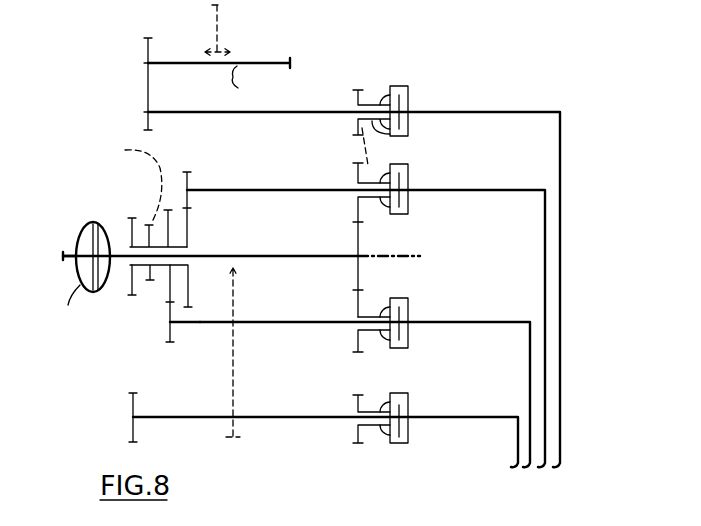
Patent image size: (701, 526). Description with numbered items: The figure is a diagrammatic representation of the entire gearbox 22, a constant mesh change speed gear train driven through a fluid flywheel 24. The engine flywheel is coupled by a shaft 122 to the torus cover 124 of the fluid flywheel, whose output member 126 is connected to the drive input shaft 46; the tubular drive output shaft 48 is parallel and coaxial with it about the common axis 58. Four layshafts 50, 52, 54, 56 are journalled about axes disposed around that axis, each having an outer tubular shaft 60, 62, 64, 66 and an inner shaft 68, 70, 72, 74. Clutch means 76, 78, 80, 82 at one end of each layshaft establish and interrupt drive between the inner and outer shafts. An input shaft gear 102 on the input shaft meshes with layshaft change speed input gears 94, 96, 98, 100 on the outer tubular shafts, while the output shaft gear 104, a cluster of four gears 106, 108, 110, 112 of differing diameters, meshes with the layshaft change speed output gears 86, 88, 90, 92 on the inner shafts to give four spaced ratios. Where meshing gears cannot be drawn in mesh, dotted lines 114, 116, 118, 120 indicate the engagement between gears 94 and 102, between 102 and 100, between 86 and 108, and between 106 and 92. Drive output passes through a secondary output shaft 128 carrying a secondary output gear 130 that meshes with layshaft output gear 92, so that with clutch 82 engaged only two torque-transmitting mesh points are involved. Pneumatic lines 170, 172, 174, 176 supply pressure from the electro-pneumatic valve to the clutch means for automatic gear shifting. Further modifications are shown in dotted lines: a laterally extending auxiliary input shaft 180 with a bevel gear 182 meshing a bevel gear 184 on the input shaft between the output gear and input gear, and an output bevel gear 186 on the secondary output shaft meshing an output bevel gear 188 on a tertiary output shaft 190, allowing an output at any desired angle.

The gearbox 22 is at (211, 444).
The fluid flywheel 24 is at (93, 292).
The drive input shaft 46 is at (196, 253).
The drive output shaft 48 is at (197, 190).
The layshaft 50 is at (371, 439).
The layshaft 52 is at (378, 333).
The layshaft 54 is at (370, 200).
The layshaft 56 is at (384, 134).
The axis 58 is at (420, 256).
The outer tubular shaft 60 is at (384, 428).
The outer tubular shaft 62 is at (400, 343).
The outer tubular shaft 64 is at (400, 209).
The outer tubular shaft 66 is at (409, 125).
The inner shaft 68 is at (385, 410).
The inner shaft 70 is at (382, 306).
The inner shaft 72 is at (409, 170).
The inner shaft 74 is at (376, 103).
The clutch means 76 is at (404, 445).
The clutch means 78 is at (418, 334).
The clutch means 80 is at (418, 205).
The clutch means 82 is at (417, 92).
The layshaft change speed output gear 86 is at (133, 434).
The layshaft change speed output gear 88 is at (171, 333).
The layshaft change speed output gear 90 is at (186, 232).
The layshaft change speed output gear 92 is at (148, 101).
The layshaft change speed input gear 94 is at (351, 440).
The layshaft change speed input gear 96 is at (358, 331).
The layshaft change speed input gear 98 is at (358, 164).
The layshaft change speed input gear 100 is at (355, 99).
The input shaft gear 102 is at (358, 282).
The output shaft gear 104 is at (203, 219).
The gear of output cluster 106 is at (150, 282).
The gear of output cluster 108 is at (131, 296).
The gear of output cluster 110 is at (189, 278).
The gear of output cluster 112 is at (190, 302).
The dotted line 114 is at (370, 352).
The dotted line 116 is at (358, 204).
The dotted line 118 is at (146, 318).
The dotted line 120 is at (123, 179).
The shaft 122 is at (80, 225).
The torus cover 124 is at (96, 225).
The output member 126 is at (80, 307).
The secondary output shaft 128 is at (254, 82).
The secondary output gear 130 is at (148, 52).
The pneumatic line 170 is at (518, 447).
The pneumatic line 172 is at (530, 408).
The pneumatic line 174 is at (545, 432).
The pneumatic line 176 is at (560, 445).
The auxiliary input shaft 180 is at (236, 345).
The bevel gear 182 is at (236, 272).
The bevel gear 184 is at (222, 246).
The output bevel gear 186 is at (203, 78).
The output bevel gear 188 is at (222, 52).
The tertiary output shaft 190 is at (222, 30).